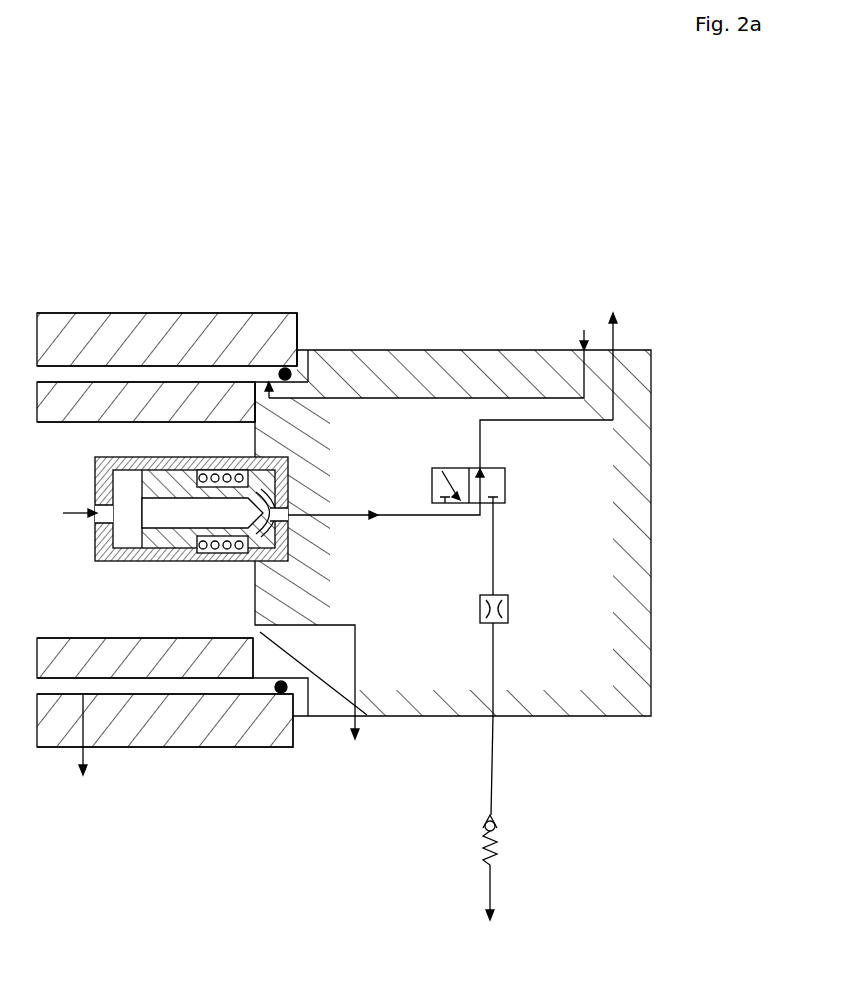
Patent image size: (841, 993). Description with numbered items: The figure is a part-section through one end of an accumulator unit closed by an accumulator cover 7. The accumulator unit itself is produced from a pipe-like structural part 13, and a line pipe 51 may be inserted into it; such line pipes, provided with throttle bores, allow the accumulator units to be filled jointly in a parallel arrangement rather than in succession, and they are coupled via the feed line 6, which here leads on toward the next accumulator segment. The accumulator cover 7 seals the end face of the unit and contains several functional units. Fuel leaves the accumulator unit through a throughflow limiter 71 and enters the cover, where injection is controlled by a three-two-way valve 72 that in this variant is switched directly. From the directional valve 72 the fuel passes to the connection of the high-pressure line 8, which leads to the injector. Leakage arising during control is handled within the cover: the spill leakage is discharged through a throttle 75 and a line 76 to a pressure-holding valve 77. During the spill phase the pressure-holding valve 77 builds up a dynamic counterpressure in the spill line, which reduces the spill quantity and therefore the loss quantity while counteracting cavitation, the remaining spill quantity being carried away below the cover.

The accumulator cover 7 is at (387, 468).
The pipe-like structural part 13 is at (145, 338).
The line pipe 51 is at (67, 398).
The throughflow limiter 71 is at (132, 540).
The feed line 6 is at (357, 667).
The high-pressure line 8 is at (612, 342).
The 3/2-way valve 72 is at (490, 482).
The throttle 75 is at (503, 613).
The line 76 is at (493, 727).
The pressure-holding valve 77 is at (498, 850).